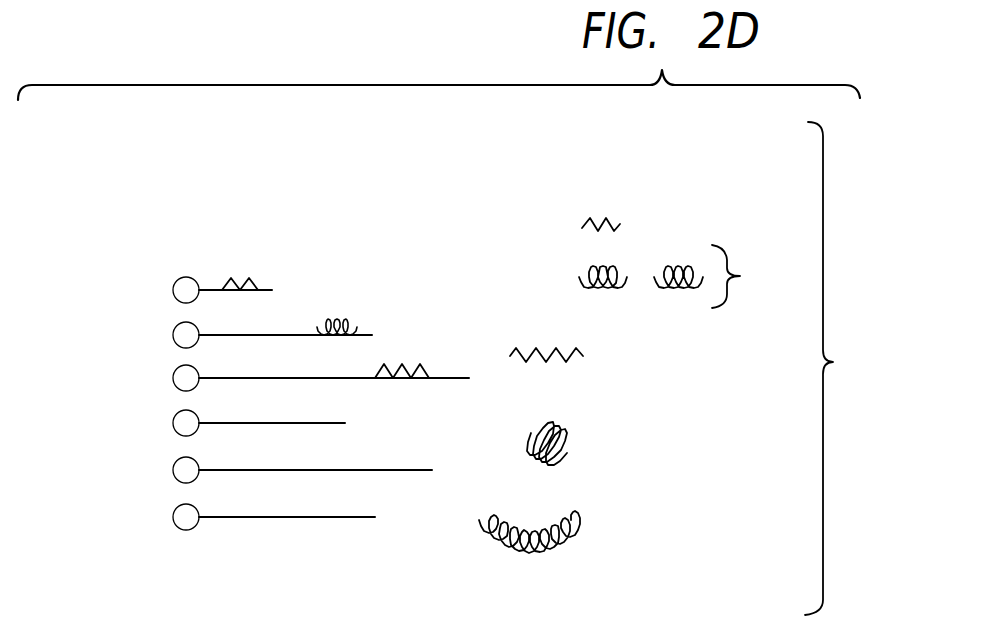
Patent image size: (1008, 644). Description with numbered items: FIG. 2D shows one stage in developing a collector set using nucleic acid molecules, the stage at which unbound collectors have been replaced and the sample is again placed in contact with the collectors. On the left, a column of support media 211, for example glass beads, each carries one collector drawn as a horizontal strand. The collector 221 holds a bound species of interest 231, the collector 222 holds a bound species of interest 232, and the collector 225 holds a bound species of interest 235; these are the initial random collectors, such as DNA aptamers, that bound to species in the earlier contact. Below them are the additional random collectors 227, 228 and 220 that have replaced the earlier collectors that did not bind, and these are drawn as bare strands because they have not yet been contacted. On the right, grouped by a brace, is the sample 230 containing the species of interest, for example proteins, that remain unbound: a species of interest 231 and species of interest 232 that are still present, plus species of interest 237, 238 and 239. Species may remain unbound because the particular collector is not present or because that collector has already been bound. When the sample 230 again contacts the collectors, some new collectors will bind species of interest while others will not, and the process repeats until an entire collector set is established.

The support media 211 is at (173, 289).
The additional random collector 220 is at (298, 530).
The collector 221 is at (260, 323).
The collector 222 is at (219, 339).
The collector 225 is at (219, 382).
The additional random collector 227 is at (219, 427).
The additional random collector 228 is at (219, 474).
The sample 230 is at (847, 368).
The species of interest 231 is at (240, 266).
The species of interest 232 is at (352, 309).
The species of interest 235 is at (430, 358).
The species of interest 237 is at (605, 355).
The species of interest 238 is at (605, 436).
The species of interest 239 is at (605, 520).